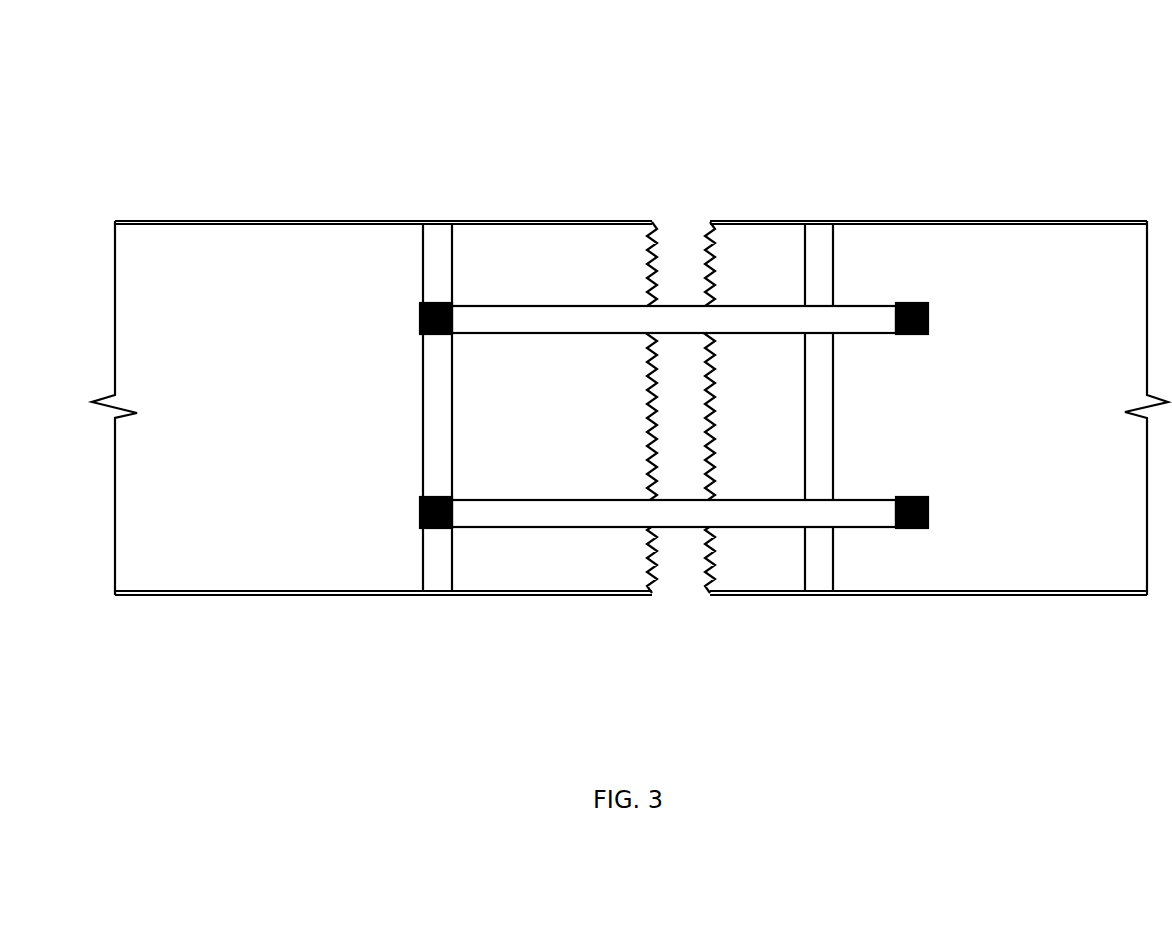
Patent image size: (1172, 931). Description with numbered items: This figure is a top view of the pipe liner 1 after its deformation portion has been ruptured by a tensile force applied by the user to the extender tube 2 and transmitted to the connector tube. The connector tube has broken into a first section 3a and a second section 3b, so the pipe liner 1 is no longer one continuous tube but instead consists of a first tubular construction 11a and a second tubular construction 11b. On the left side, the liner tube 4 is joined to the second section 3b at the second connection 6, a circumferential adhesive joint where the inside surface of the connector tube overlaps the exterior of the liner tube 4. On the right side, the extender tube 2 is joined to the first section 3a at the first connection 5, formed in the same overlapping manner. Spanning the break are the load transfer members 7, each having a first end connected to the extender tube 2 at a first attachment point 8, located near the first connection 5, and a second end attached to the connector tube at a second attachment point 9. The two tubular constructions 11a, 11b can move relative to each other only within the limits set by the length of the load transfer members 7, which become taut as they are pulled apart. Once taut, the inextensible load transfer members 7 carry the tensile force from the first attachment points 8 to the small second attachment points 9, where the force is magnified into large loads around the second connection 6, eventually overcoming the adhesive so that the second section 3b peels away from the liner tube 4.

The pipe liner 1 is at (240, 102).
The extender tube 2 is at (1115, 237).
The first section of the connector tube 3a is at (746, 234).
The second section of the connector tube 3b is at (569, 240).
The liner tube 4 is at (126, 304).
The first connection 5 is at (818, 222).
The second connection 6 is at (437, 220).
The load transfer member 7 is at (863, 334).
The first attachment point 8 is at (928, 318).
The second attachment point 9 is at (420, 320).
The first tubular construction 11a is at (772, 626).
The second tubular construction 11b is at (523, 626).